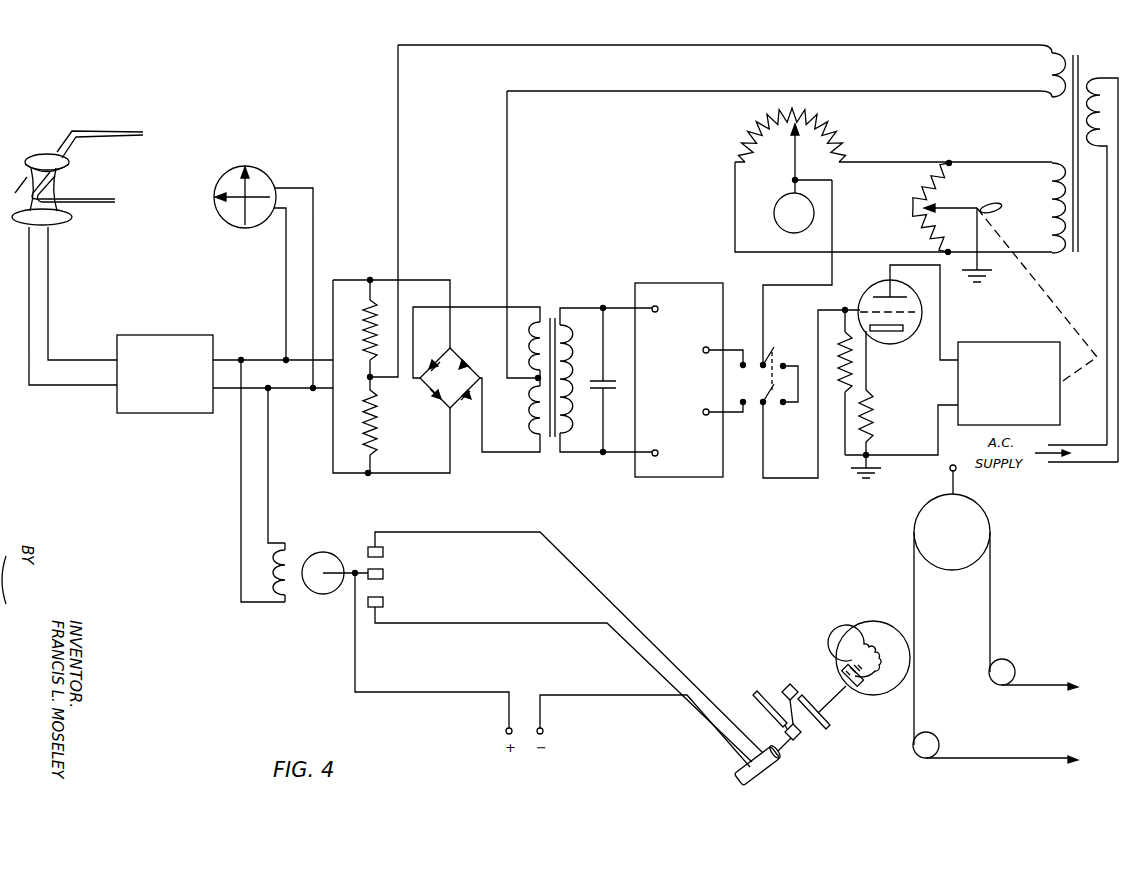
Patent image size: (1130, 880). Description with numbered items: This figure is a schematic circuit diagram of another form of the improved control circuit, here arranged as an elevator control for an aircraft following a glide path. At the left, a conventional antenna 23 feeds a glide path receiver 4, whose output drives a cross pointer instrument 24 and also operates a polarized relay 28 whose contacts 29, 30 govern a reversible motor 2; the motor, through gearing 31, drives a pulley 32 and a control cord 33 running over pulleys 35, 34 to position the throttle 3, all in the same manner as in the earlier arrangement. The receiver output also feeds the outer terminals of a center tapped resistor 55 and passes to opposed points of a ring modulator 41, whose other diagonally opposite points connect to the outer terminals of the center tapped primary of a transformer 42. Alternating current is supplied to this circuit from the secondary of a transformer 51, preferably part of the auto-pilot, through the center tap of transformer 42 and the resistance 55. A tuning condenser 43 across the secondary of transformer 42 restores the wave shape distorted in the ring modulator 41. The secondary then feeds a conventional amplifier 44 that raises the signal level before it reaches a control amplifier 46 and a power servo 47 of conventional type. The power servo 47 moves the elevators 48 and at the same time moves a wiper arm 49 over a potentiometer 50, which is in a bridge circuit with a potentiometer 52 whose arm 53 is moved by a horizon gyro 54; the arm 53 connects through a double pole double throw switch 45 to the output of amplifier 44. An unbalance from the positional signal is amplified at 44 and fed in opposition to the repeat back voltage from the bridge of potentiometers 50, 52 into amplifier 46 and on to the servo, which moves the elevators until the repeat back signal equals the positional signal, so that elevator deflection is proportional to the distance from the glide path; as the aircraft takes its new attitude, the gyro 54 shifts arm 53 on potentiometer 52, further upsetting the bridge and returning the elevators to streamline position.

The antenna 23 is at (48, 150).
The cross pointer instrument 24 is at (258, 170).
The glide path receiver 4 is at (180, 335).
The center tapped resistor 55 is at (364, 358).
The ring modulator 41 is at (456, 356).
The transformer 42 is at (556, 318).
The tuning condenser 43 is at (604, 379).
The amplifier 44 is at (670, 282).
The double pole double throw switch 45 is at (757, 405).
The control amplifier 46 is at (911, 337).
The power servo 47 is at (993, 340).
The elevators 48 is at (986, 203).
The wiper arm 49 is at (951, 207).
The potentiometer 50 is at (908, 208).
The transformer 51 is at (1086, 69).
The potentiometer 52 is at (824, 129).
The arm 53 is at (792, 166).
The horizon gyro 54 is at (775, 220).
The throttle 3 is at (990, 514).
The control cord 33 is at (991, 587).
The pulley 35 is at (1013, 667).
The pulley 34 is at (938, 738).
The pulley 32 is at (857, 622).
The gearing 31 is at (833, 722).
The reversible motor 2 is at (779, 763).
The polarized relay 28 is at (318, 596).
The relay contact 29 is at (385, 552).
The relay contact 30 is at (385, 602).